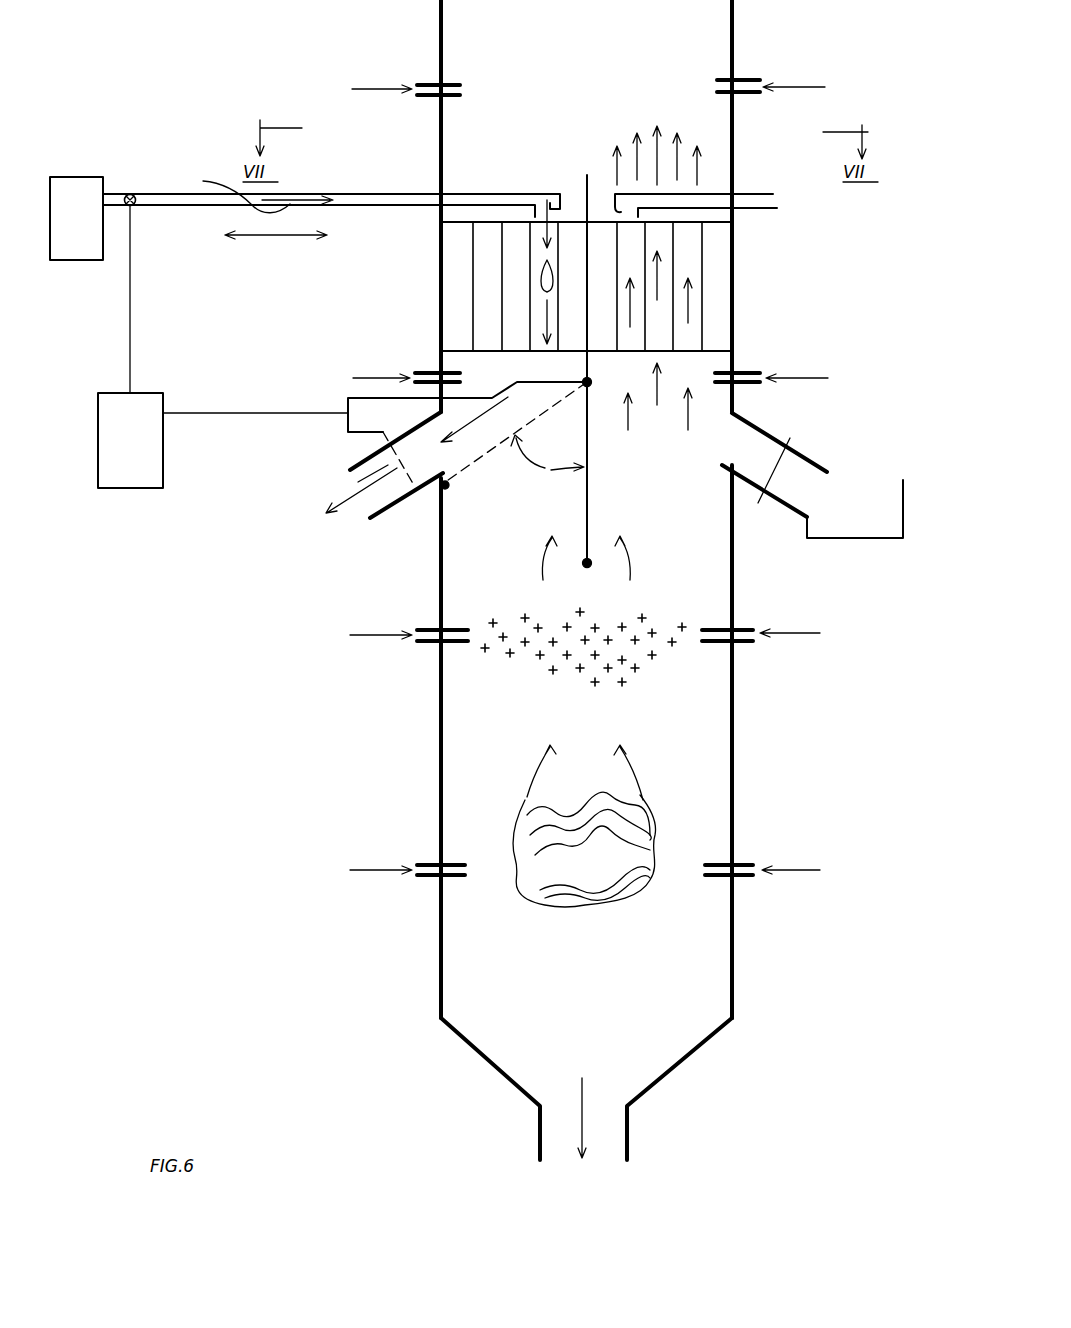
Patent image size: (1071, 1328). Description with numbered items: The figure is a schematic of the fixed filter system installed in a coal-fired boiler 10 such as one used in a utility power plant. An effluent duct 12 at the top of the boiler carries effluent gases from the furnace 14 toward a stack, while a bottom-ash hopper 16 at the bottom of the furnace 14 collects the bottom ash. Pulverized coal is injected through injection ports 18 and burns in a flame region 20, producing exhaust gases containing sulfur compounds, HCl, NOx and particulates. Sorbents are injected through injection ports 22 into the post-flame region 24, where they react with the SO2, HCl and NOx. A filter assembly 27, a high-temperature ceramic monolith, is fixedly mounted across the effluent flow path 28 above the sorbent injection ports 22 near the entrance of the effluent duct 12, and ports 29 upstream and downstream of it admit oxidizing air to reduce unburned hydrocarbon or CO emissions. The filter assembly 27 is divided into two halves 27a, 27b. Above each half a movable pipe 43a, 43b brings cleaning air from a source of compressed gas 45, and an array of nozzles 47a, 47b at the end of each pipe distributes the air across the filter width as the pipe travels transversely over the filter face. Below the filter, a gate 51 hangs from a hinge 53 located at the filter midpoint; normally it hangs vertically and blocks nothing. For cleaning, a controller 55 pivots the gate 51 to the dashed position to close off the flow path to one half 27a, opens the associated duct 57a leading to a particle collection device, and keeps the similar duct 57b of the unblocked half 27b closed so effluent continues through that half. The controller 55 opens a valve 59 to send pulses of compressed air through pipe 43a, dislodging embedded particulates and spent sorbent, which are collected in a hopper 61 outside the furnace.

The coal-fired boiler 10 is at (244, 676).
The effluent duct 12 is at (705, 29).
The furnace 14 is at (705, 763).
The bottom-ash hopper 16 is at (640, 1058).
The injection ports 18 is at (428, 878).
The flame region 20 is at (610, 858).
The injection ports 22 is at (428, 645).
The post-flame region 24 is at (633, 657).
The filter assembly 27 is at (586, 286).
The filter assembly half 27a is at (440, 283).
The filter assembly half 27b is at (715, 323).
The effluent flow path 28 is at (617, 471).
The ports 29 is at (433, 80).
The movable pipe 43a is at (356, 207).
The movable pipe 43b is at (740, 195).
The source of compressed gas 45 is at (167, 205).
The array of nozzles 47a is at (566, 200).
The array of nozzles 47b is at (608, 205).
The gate 51 is at (590, 447).
The hinge 53 is at (590, 382).
The controller 55 is at (342, 435).
The duct 57a is at (367, 458).
The duct 57b is at (750, 453).
The valve 59 is at (138, 205).
The hopper 61 is at (865, 521).